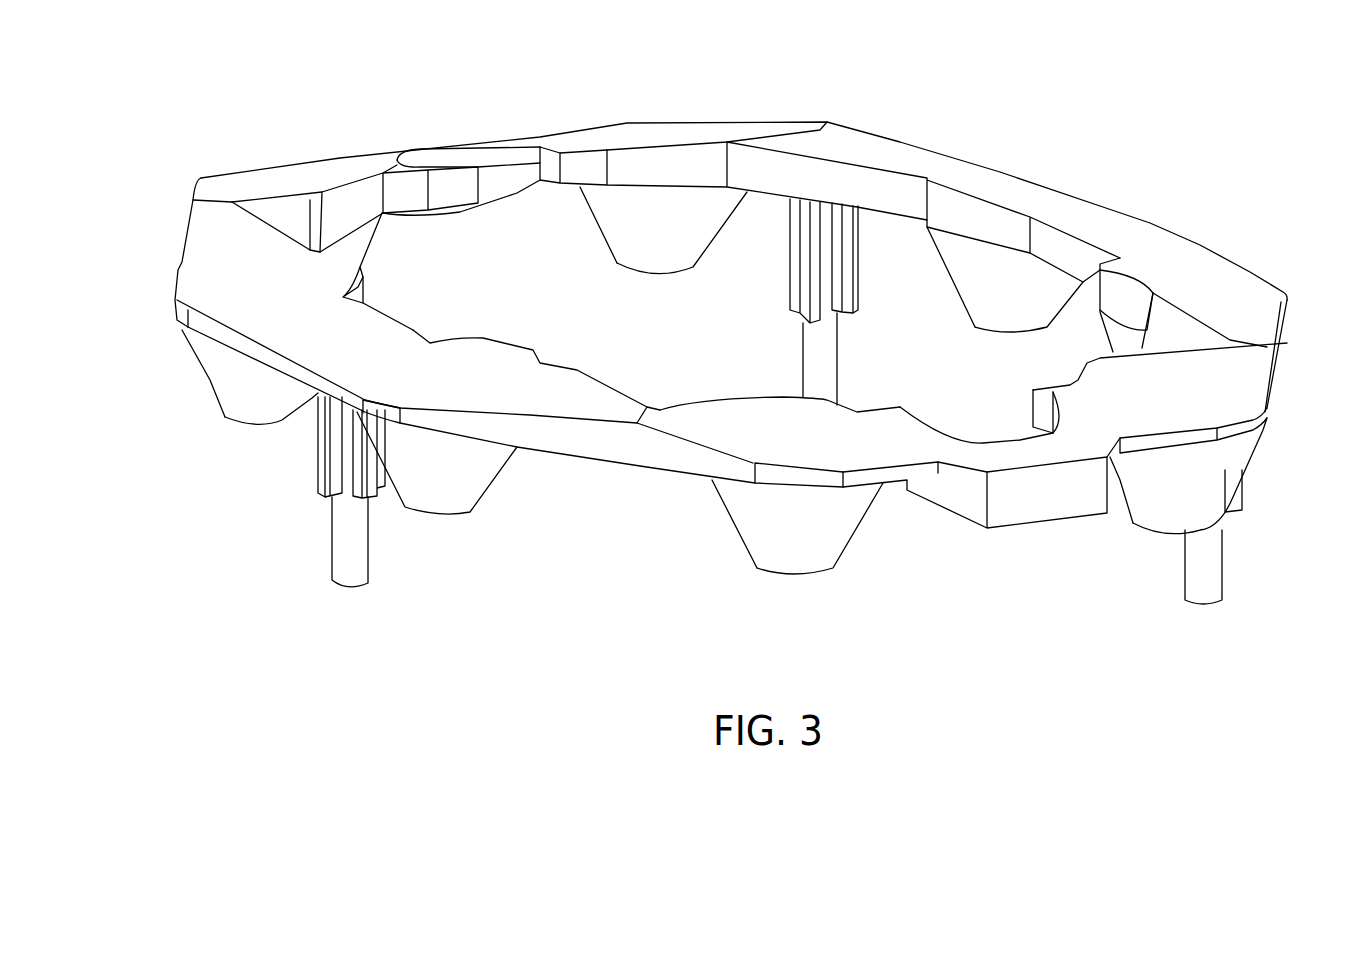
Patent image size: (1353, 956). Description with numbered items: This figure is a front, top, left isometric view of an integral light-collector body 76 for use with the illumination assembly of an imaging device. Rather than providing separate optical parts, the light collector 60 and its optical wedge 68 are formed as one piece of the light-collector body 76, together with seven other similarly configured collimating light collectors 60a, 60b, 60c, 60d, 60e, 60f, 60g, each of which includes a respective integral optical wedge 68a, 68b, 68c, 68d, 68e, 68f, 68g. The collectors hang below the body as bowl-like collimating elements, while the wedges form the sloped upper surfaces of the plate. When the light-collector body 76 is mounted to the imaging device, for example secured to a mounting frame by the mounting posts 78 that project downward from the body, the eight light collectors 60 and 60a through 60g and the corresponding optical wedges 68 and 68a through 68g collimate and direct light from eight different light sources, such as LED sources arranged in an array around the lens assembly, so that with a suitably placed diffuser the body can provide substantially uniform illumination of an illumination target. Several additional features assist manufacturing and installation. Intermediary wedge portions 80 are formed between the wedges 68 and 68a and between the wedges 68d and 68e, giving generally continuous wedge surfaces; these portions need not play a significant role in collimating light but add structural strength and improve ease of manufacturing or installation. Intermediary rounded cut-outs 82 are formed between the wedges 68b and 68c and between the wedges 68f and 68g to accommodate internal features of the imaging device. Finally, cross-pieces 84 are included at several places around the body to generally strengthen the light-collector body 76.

The light-collector body 76 is at (197, 143).
The mounting posts 78 is at (858, 243).
The intermediary wedge portions 80 is at (1088, 208).
The intermediary rounded cut-outs 82 is at (473, 160).
The cross-pieces 84 is at (292, 208).
The light collector 60 is at (232, 348).
The optical wedge 68 is at (447, 380).
The collimating light collector 60a is at (245, 412).
The collimating light collector 60b is at (368, 250).
The collimating light collector 60c is at (653, 220).
The collimating light collector 60d is at (990, 277).
The collimating light collector 60e is at (1127, 333).
The collimating light collector 60f is at (1157, 530).
The collimating light collector 60g is at (797, 577).
The optical wedge 68a is at (247, 308).
The optical wedge 68b is at (242, 187).
The optical wedge 68c is at (662, 132).
The optical wedge 68d is at (972, 183).
The optical wedge 68e is at (1173, 263).
The optical wedge 68f is at (1177, 412).
The optical wedge 68g is at (787, 450).